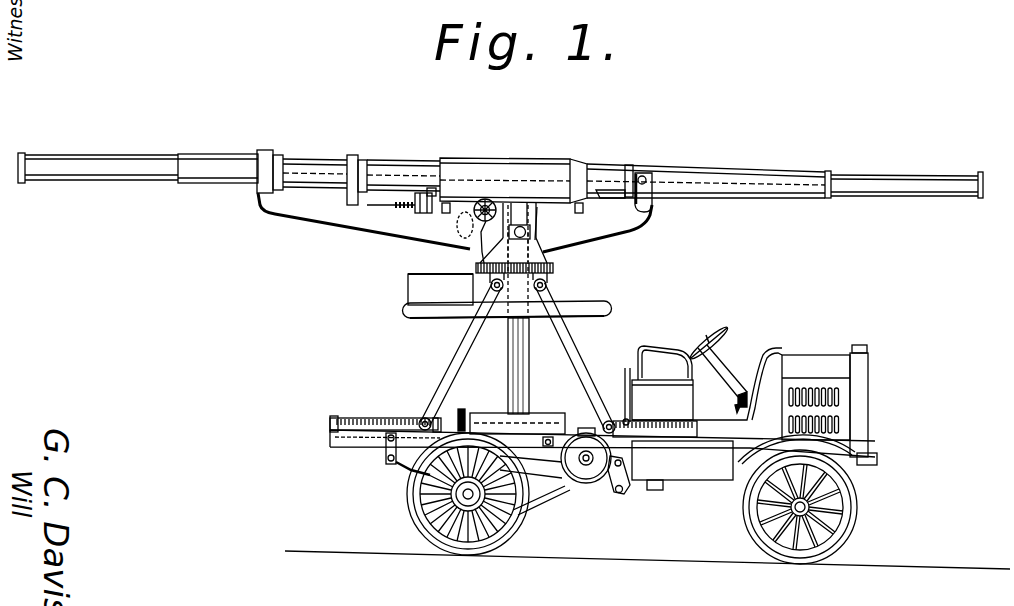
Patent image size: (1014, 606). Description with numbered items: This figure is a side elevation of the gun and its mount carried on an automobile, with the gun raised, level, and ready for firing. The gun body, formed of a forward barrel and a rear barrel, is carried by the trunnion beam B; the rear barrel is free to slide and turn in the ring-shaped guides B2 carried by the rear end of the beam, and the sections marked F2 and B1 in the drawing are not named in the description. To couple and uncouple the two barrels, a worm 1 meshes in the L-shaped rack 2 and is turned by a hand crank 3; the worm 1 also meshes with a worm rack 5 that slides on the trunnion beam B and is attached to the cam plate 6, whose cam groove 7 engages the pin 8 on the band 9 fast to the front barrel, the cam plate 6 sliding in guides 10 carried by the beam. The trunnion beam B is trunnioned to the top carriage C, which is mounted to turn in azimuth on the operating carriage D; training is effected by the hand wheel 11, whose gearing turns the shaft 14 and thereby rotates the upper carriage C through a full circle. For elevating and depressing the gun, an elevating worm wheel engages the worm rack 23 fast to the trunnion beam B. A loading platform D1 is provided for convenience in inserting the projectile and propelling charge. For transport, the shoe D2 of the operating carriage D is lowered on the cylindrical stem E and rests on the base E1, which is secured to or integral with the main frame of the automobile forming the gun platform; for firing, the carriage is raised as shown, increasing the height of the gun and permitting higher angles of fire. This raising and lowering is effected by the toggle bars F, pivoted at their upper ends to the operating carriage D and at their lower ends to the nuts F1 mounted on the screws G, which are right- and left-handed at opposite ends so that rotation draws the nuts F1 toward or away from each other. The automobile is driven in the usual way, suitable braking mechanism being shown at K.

The left barrel section F2 is at (240, 155).
The nuts F1 is at (417, 418).
The toggle bars F is at (455, 364).
The trunnion beam B is at (623, 237).
The right cradle bracket B1 is at (652, 200).
The ring-shaped guides B2 is at (360, 134).
The worm 1 is at (440, 190).
The L-shaped rack 2 is at (432, 188).
The hand crank 3 is at (423, 213).
The worm rack 5 is at (400, 202).
The cam plate 6 is at (536, 208).
The cam groove 7 is at (617, 188).
The pin 8 is at (652, 223).
The band 9 is at (638, 172).
The guides 10 is at (583, 214).
The hand wheel 11 is at (488, 199).
The worm rack 23 is at (468, 250).
The top carriage C is at (560, 263).
The operating carriage D is at (552, 294).
The loading platform D1 is at (408, 286).
The shoe D2 is at (500, 308).
The shaft 14 is at (440, 288).
The cylindrical stem E is at (530, 364).
The base E1 is at (535, 412).
The screws G is at (348, 415).
The braking mechanism K is at (595, 478).